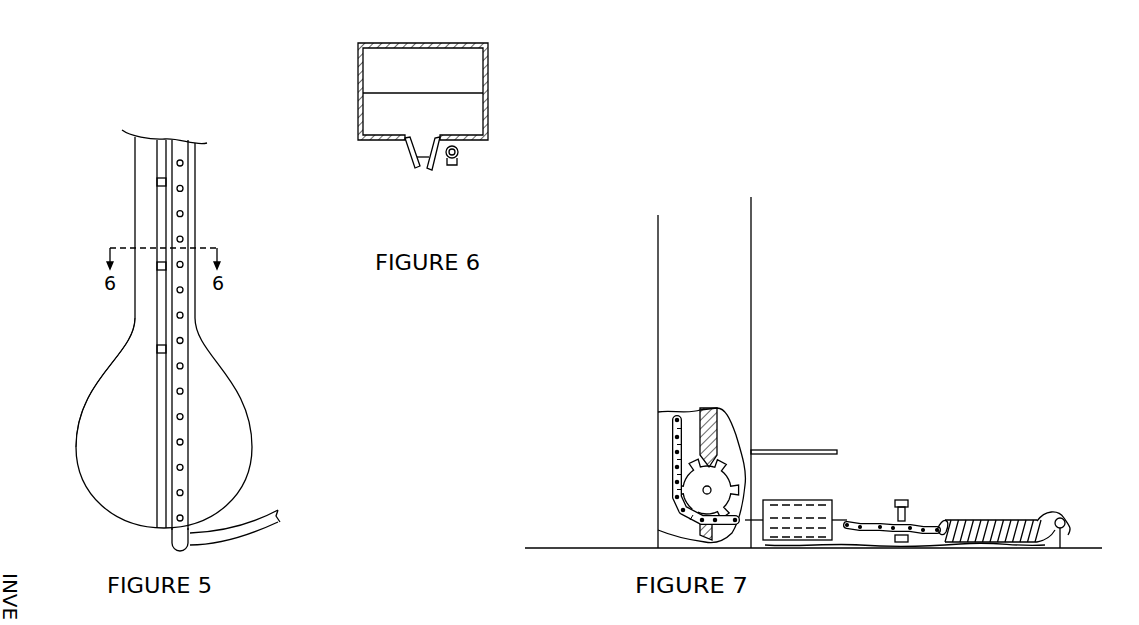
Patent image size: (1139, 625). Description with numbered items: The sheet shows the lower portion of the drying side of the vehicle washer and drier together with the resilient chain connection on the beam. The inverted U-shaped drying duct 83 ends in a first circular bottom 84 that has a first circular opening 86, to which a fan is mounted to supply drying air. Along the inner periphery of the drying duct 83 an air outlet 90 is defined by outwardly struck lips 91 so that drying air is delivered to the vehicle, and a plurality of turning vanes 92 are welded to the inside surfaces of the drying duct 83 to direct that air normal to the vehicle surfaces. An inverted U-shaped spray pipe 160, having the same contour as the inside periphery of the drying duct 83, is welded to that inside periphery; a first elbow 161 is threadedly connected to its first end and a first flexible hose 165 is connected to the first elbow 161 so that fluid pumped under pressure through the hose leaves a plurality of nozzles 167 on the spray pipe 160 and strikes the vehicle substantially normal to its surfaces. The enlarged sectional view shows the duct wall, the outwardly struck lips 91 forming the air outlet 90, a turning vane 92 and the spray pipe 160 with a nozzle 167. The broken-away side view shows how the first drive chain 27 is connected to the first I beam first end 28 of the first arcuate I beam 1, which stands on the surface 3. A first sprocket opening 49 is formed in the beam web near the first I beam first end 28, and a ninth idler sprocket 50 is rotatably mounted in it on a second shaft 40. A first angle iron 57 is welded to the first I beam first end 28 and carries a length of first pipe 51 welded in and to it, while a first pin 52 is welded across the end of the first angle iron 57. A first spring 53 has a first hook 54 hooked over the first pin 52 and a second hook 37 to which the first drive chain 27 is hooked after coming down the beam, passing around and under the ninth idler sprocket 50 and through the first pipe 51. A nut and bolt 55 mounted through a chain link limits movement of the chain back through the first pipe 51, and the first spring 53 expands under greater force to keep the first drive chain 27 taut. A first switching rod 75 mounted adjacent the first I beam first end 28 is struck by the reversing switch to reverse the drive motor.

In FIG. 7, the first arcuate I beam 1 is at (658, 315).
In FIG. 7, the surface 3 is at (570, 547).
In FIG. 7, the first drive chain 27 is at (668, 459).
In FIG. 7, the first I beam first end 28 is at (658, 520).
In FIG. 7, the second hook 37 is at (943, 520).
In FIG. 7, the second shaft 40 is at (740, 488).
In FIG. 7, the first sprocket opening 49 is at (713, 450).
In FIG. 7, the ninth idler sprocket 50 is at (728, 467).
In FIG. 7, the first pipe 51 is at (812, 500).
In FIG. 7, the first pin 52 is at (1070, 525).
In FIG. 7, the first spring 53 is at (995, 520).
In FIG. 7, the first hook 54 is at (1063, 520).
In FIG. 7, the nut and bolt 55 is at (905, 500).
In FIG. 7, the first angle iron 57 is at (845, 547).
In FIG. 7, the first switching rod 75 is at (842, 452).
In FIG. 5, the drying duct 83 is at (135, 193).
In FIG. 6, the drying duct 83 is at (488, 50).
In FIG. 5, the first circular bottom 84 is at (107, 510).
In FIG. 5, the first circular opening 86 is at (150, 357).
In FIG. 5, the air outlet 90 is at (160, 323).
In FIG. 6, the air outlet 90 is at (422, 158).
In FIG. 5, the outwardly struck lips 91 is at (168, 435).
In FIG. 6, the outwardly struck lips 91 is at (415, 173).
In FIG. 5, the turning vanes 92 is at (160, 183).
In FIG. 6, the turning vanes 92 is at (475, 111).
In FIG. 5, the spray pipe 160 is at (187, 324).
In FIG. 6, the spray pipe 160 is at (458, 156).
In FIG. 5, the first elbow 161 is at (172, 540).
In FIG. 5, the first flexible hose 165 is at (248, 538).
In FIG. 5, the nozzles 167 is at (183, 213).
In FIG. 6, the nozzles 167 is at (450, 160).